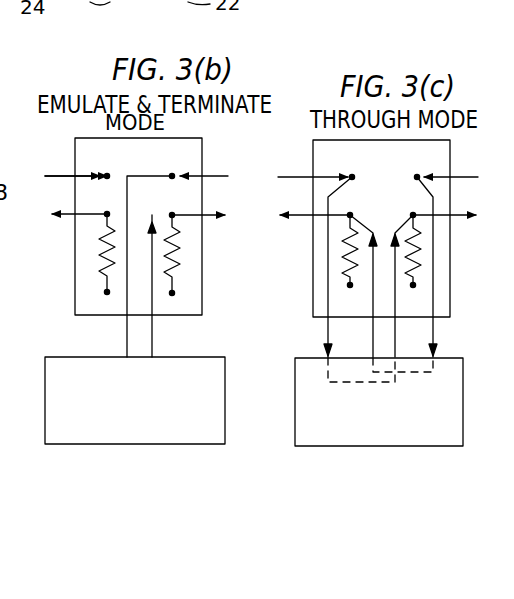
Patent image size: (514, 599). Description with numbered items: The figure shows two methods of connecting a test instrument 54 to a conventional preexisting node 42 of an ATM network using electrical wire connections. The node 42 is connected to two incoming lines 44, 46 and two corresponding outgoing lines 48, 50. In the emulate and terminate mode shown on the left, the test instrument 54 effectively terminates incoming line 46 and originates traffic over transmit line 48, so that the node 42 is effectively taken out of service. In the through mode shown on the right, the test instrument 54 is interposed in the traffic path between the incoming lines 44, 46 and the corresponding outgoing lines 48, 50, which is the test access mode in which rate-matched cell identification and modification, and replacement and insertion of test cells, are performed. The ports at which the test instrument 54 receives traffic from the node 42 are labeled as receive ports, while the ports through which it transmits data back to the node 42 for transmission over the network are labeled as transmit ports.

In FIG. 3B, the node 42 is at (75, 300).
In FIG. 3C, the node 42 is at (381, 228).
In FIG. 3B, the incoming line 44 is at (58, 176).
In FIG. 3C, the incoming line 44 is at (300, 177).
In FIG. 3B, the incoming line 46 is at (216, 176).
In FIG. 3C, the incoming line 46 is at (465, 177).
In FIG. 3B, the outgoing line 48 is at (210, 217).
In FIG. 3C, the outgoing line 48 is at (460, 217).
In FIG. 3B, the outgoing line 50 is at (60, 216).
In FIG. 3C, the outgoing line 50 is at (300, 217).
In FIG. 3B, the test instrument 54 is at (45, 418).
In FIG. 3C, the test instrument 54 is at (295, 417).